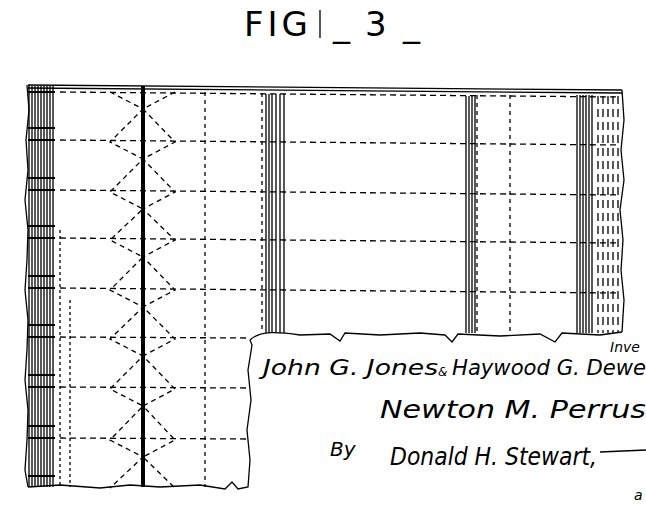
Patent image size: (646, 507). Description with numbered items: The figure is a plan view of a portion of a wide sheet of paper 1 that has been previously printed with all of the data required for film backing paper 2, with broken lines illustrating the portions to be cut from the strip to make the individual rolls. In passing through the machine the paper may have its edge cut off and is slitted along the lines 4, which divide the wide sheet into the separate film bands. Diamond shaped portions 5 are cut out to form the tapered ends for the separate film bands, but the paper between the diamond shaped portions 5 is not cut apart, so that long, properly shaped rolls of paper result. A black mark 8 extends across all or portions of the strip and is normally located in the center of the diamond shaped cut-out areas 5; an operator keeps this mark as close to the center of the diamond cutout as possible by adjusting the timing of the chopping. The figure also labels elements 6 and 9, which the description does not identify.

The film strip 1 is at (553, 84).
The longitudinal fold lines 2 is at (196, 94).
The transverse severance lines 4 is at (354, 95).
The central adhesive line 5 is at (144, 88).
The panel sections 6 is at (160, 288).
The diagonal fold lines 8 is at (143, 332).
The perforated margin 9 is at (258, 298).